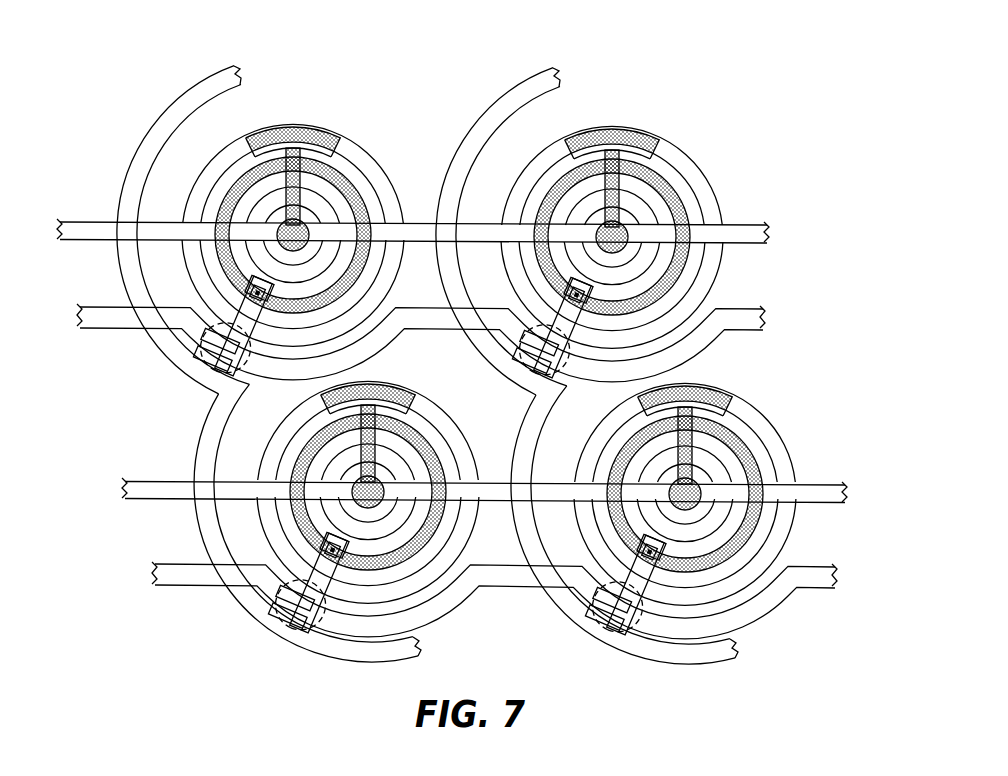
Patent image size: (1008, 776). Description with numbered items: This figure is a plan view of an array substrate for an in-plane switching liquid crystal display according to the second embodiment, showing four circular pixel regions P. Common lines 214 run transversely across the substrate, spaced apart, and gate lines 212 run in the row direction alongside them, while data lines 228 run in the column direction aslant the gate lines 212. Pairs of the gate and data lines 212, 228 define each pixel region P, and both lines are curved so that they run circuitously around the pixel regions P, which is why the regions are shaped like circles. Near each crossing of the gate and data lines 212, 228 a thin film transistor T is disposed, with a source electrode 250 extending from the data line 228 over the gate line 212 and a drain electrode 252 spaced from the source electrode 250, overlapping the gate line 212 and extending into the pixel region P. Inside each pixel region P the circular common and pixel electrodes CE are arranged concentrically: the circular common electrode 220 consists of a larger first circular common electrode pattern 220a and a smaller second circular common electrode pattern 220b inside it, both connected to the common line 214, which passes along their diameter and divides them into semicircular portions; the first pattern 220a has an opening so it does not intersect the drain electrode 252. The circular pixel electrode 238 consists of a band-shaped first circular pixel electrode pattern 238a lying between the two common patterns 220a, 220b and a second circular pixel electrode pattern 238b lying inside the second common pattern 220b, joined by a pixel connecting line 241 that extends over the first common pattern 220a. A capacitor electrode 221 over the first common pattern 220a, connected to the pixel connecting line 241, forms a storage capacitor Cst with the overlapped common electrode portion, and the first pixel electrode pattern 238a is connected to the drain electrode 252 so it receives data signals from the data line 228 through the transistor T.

The common line 214 is at (770, 236).
The gate line 212 is at (767, 321).
The circular common electrode 220 is at (358, 61).
The first circular common electrode pattern 220a is at (293, 127).
The second circular common electrode pattern 220b is at (337, 128).
The capacitor electrode 221 is at (262, 126).
The circular pixel electrode 238 is at (400, 27).
The first circular pixel electrode pattern 238a is at (340, 170).
The second circular pixel electrode pattern 238b is at (355, 187).
The pixel connecting line 241 is at (278, 232).
The source electrode 250 is at (197, 352).
The drain electrode 252 is at (204, 335).
The data line 228 is at (422, 649).
The circular common and pixel electrodes CE is at (342, 210).
The storage capacitor Cst is at (460, 222).
The pixel region P is at (417, 353).
The thin film transistor T is at (207, 368).